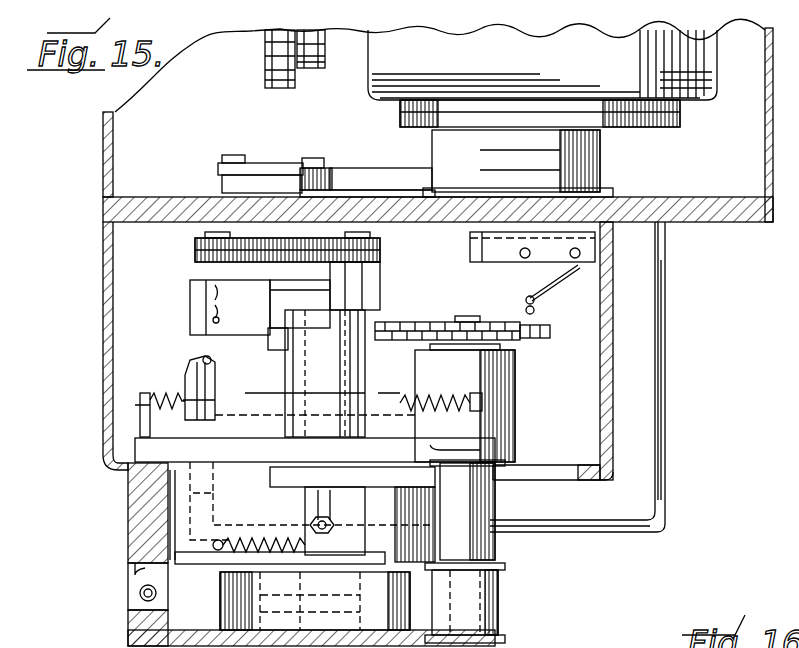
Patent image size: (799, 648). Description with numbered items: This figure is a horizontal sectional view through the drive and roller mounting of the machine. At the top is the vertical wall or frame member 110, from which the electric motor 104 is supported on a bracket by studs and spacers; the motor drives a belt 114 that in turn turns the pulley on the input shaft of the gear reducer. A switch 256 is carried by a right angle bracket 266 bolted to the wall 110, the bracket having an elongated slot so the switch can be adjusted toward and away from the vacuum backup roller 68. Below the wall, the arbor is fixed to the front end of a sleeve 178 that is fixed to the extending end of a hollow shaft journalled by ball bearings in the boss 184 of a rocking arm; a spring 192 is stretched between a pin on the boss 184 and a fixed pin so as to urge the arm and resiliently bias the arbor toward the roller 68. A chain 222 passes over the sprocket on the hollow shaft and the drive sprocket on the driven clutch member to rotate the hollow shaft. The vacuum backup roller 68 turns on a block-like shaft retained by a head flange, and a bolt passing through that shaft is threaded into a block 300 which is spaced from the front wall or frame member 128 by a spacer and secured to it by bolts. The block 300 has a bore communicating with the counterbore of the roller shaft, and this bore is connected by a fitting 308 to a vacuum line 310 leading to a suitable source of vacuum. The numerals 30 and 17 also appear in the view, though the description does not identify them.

The vertical wall or frame member 110 is at (147, 205).
The belt 114 is at (300, 104).
The electric motor 104 is at (712, 102).
The right angle bracket 266 is at (607, 230).
The switch 256 is at (595, 267).
The chain 222 is at (400, 330).
The boss 184 is at (505, 380).
The spring 192 is at (398, 396).
The front wall or frame member 128 is at (242, 422).
The vacuum line 310 is at (190, 370).
The fitting 308 is at (195, 432).
The block 300 is at (185, 520).
The vacuum backup roller 68 is at (230, 612).
The sleeve 178 is at (480, 545).
The drum 30 is at (490, 592).
The base 17 is at (520, 640).